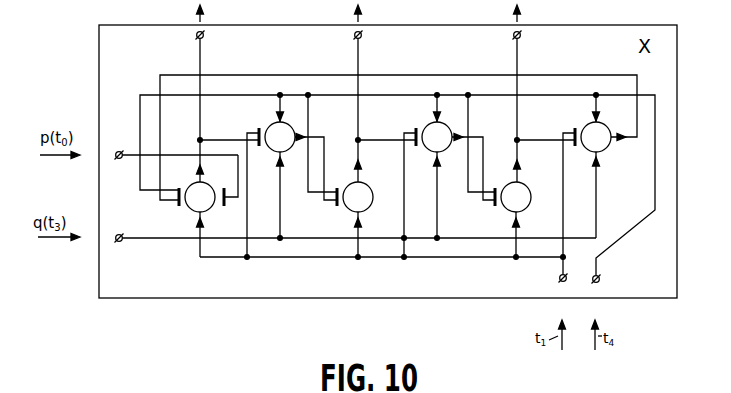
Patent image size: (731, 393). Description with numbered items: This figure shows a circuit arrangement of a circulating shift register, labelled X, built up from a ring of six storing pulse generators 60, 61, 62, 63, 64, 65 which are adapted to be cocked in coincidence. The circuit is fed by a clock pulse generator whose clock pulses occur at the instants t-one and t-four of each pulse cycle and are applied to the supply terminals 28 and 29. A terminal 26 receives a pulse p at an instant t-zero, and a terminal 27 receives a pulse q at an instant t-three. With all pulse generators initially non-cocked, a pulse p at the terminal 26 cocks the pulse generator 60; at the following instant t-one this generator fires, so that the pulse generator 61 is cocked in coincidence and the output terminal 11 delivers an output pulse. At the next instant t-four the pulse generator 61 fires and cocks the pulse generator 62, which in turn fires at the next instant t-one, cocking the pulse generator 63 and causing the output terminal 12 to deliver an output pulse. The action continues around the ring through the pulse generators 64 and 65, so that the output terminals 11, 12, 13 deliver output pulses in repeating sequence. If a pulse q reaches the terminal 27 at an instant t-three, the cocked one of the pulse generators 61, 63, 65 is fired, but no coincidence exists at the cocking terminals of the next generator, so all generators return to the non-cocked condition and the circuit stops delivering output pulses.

The output terminal 11 is at (203, 35).
The output terminal 12 is at (361, 35).
The output terminal 13 is at (520, 35).
The terminal 26 is at (117, 151).
The terminal 27 is at (116, 241).
The supply terminal 28 is at (559, 278).
The supply terminal 29 is at (599, 279).
The storing pulse generator 60 is at (201, 197).
The storing pulse generator 61 is at (277, 137).
The storing pulse generator 62 is at (355, 197).
The storing pulse generator 63 is at (434, 137).
The storing pulse generator 64 is at (513, 197).
The storing pulse generator 65 is at (593, 137).